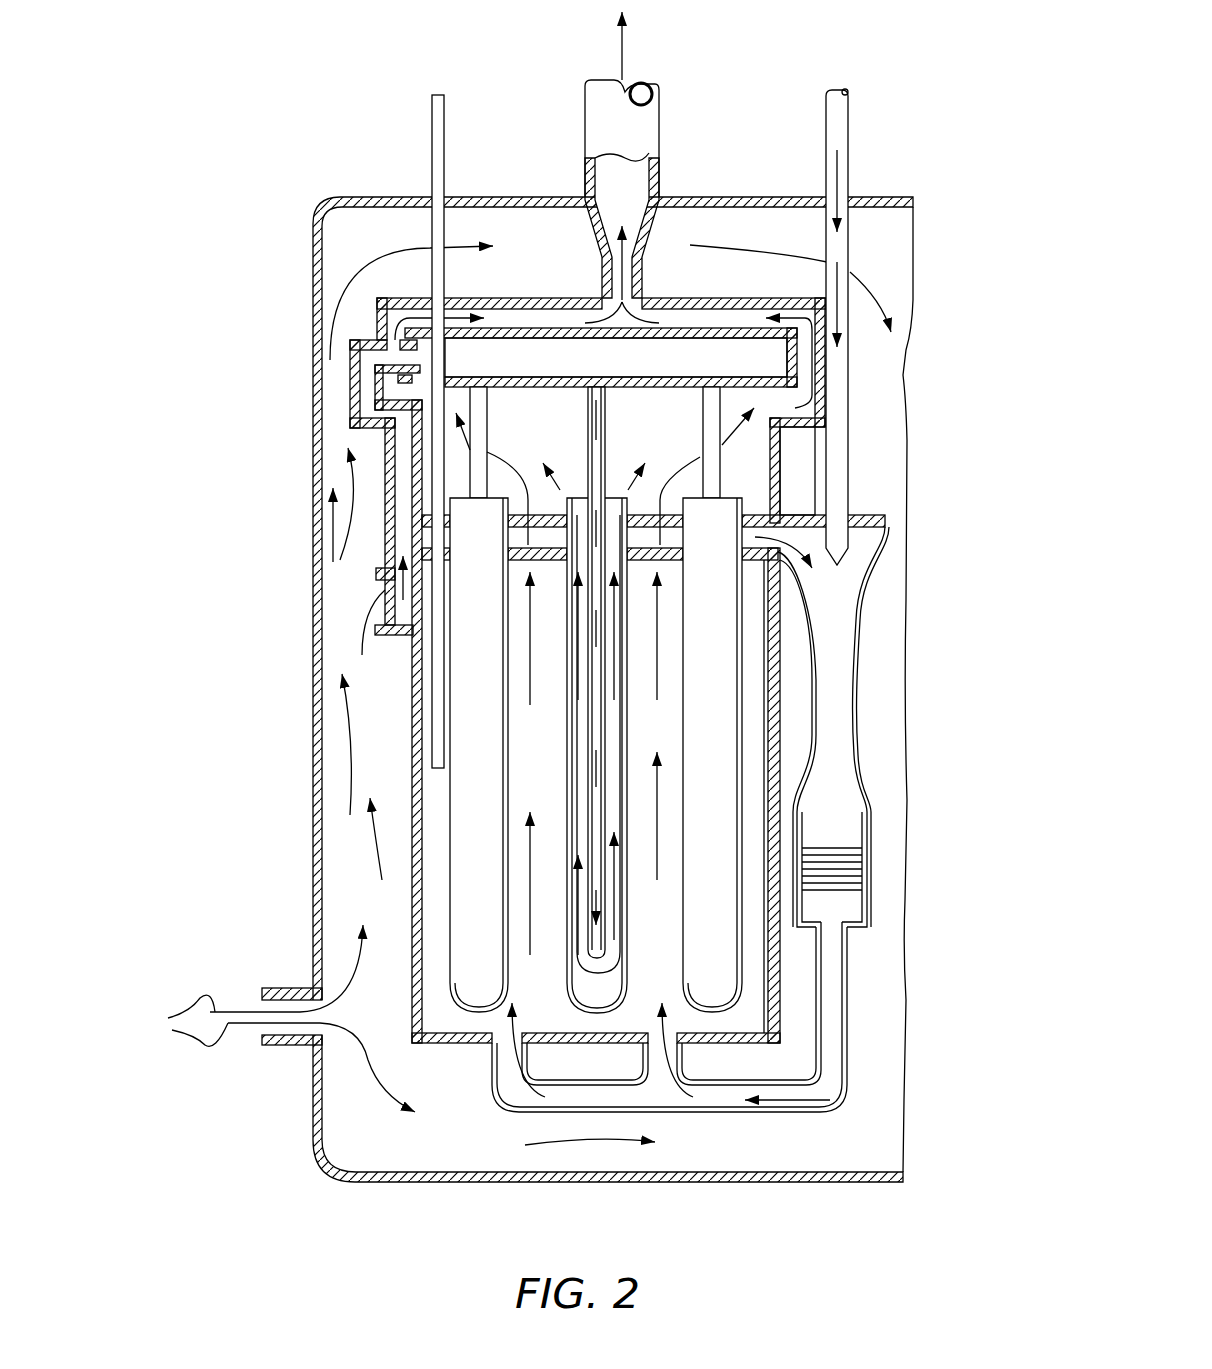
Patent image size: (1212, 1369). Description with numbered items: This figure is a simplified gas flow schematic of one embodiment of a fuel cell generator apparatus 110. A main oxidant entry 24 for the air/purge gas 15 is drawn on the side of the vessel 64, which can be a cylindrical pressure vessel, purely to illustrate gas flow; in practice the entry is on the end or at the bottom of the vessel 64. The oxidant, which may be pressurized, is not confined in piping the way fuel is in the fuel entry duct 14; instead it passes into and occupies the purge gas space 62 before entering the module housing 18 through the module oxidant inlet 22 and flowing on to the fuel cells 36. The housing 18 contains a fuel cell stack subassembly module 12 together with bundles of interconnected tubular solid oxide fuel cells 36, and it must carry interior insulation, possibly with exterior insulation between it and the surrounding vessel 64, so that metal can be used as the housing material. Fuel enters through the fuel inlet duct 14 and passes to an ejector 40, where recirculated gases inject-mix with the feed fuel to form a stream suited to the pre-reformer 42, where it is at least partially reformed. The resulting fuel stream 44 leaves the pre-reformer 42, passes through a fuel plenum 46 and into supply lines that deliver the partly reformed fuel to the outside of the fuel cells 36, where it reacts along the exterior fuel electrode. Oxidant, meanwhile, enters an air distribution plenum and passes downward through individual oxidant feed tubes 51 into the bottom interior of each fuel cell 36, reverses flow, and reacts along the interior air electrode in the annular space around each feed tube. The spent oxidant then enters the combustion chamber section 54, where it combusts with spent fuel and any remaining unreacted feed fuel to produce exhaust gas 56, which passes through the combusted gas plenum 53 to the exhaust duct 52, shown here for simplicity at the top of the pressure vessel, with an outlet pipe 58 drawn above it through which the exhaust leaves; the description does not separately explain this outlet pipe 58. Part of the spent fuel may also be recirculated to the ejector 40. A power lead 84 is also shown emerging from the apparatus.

The fuel cell generator apparatus 110 is at (252, 368).
The fuel cell stack subassembly module 12 is at (537, 297).
The fuel inlet duct 14 is at (848, 143).
The air/purge gas 15 is at (277, 1018).
The module housing 18 is at (412, 900).
The module oxidant inlet 22 is at (390, 640).
The main oxidant entry 24 is at (290, 988).
The fuel cells 36 is at (490, 782).
The ejector 40 is at (835, 565).
The pre-reformer 42 is at (867, 870).
The fuel stream 44 is at (835, 1065).
The fuel plenum 46 is at (505, 1105).
The oxidant feed tube 51 is at (607, 453).
The exhaust duct 52 is at (573, 297).
The combusted gas plenum 53 is at (717, 318).
The combustion chamber section 54 is at (750, 472).
The exhaust gas 56 is at (625, 47).
The outlet pipe 58 is at (585, 124).
The purge gas space 62 is at (345, 245).
The vessel 64 is at (313, 668).
The power lead 84 is at (432, 133).